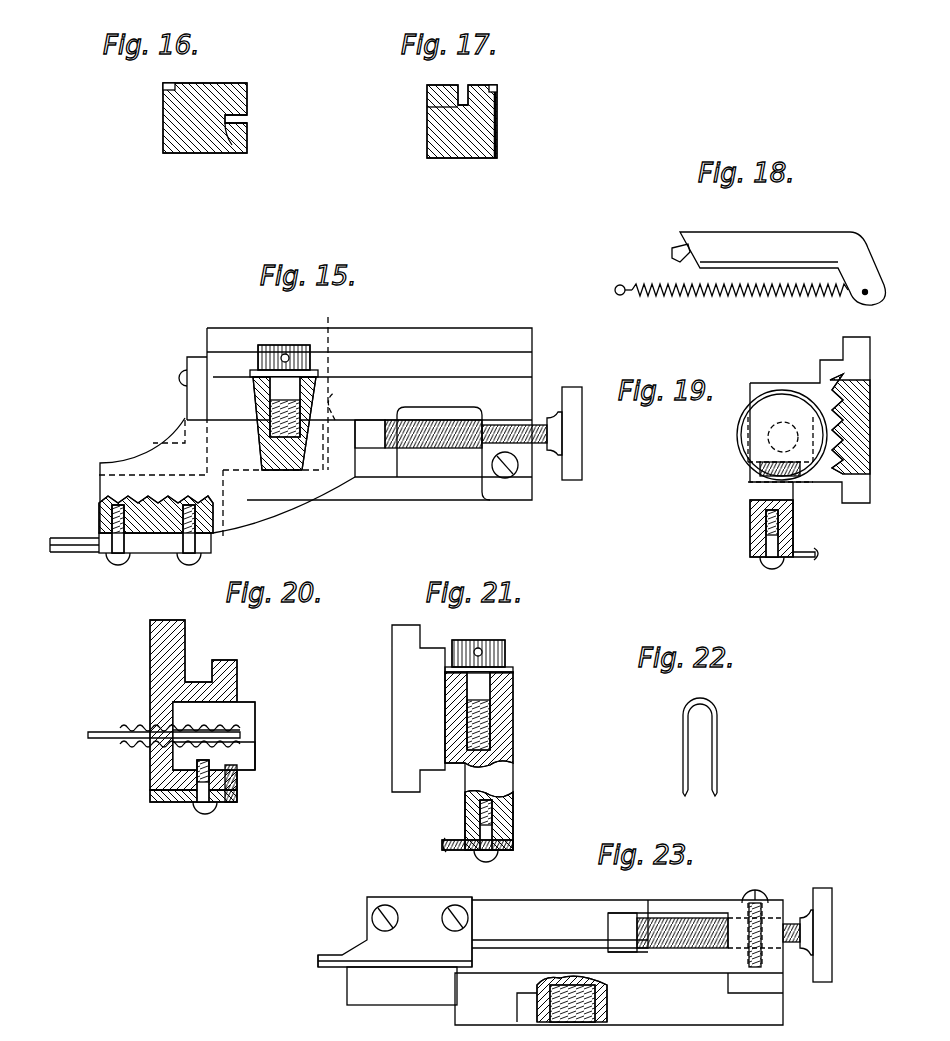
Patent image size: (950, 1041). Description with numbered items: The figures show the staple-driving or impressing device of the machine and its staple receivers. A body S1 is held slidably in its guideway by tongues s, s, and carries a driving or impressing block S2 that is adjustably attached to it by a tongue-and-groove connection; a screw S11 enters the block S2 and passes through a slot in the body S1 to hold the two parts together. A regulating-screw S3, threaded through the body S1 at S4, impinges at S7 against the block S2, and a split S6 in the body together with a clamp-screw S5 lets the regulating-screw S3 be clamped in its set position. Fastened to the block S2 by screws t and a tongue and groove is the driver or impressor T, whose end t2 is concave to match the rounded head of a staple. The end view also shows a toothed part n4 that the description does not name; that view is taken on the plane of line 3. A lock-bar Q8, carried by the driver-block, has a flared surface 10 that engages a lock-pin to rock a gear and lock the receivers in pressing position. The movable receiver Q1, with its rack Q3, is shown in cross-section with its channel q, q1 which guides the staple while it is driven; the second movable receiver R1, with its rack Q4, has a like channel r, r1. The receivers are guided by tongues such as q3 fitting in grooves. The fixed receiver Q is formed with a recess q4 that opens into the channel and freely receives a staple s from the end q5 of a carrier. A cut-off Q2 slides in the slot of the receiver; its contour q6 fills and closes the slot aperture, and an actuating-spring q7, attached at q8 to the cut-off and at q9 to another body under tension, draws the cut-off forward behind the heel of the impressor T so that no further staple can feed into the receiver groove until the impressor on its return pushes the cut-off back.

In FIG. 16, the movable receiver Q1 is at (194, 153).
In FIG. 20, the movable receiver Q1 is at (193, 711).
In FIG. 16, the rack Q3 is at (168, 87).
In FIG. 16, the channel groove q1 is at (247, 119).
In FIG. 20, the channel groove q1 is at (248, 738).
In FIG. 16, the channel slot q is at (247, 145).
In FIG. 20, the channel slot q is at (255, 762).
In FIG. 17, the movable receiver R1 is at (440, 121).
In FIG. 17, the channel slot r is at (427, 107).
In FIG. 17, the channel groove r1 is at (463, 98).
In FIG. 17, the rack Q4 is at (497, 90).
In FIG. 18, the cut-off Q2 is at (783, 268).
In FIG. 18, the cut-off contour q6 is at (672, 256).
In FIG. 18, the actuating-spring q7 is at (712, 296).
In FIG. 18, the spring attachment on cut-off q8 is at (863, 294).
In FIG. 18, the spring attachment on body q9 is at (619, 296).
In FIG. 15, the tongues s is at (355, 416).
In FIG. 19, the tongues s is at (866, 349).
In FIG. 21, the tongues s is at (418, 708).
In FIG. 22, the tongues s is at (708, 747).
In FIG. 23, the tongues s is at (619, 962).
In FIG. 15, the body of impressing device S1 is at (418, 389).
In FIG. 19, the body of impressing device S1 is at (852, 373).
In FIG. 21, the body of impressing device S1 is at (412, 689).
In FIG. 23, the body of impressing device S1 is at (783, 980).
In FIG. 15, the screw S11 is at (448, 441).
In FIG. 15, the driving or impressing block S2 is at (272, 481).
In FIG. 19, the driving or impressing block S2 is at (750, 500).
In FIG. 21, the driving or impressing block S2 is at (515, 772).
In FIG. 23, the driving or impressing block S2 is at (560, 932).
In FIG. 15, the regulating-screw S3 is at (582, 428).
In FIG. 19, the regulating-screw S3 is at (782, 435).
In FIG. 23, the regulating-screw S3 is at (815, 935).
In FIG. 15, the threaded portion S4 is at (328, 397).
In FIG. 15, the clamp-screw S5 is at (503, 478).
In FIG. 19, the clamp-screw S5 is at (748, 470).
In FIG. 23, the clamp-screw S5 is at (760, 915).
In FIG. 15, the split S6 is at (466, 434).
In FIG. 23, the split S6 is at (772, 928).
In FIG. 15, the impinging point S7 is at (372, 448).
In FIG. 23, the impinging point S7 is at (622, 932).
In FIG. 15, the ratchet teeth n4 is at (358, 397).
In FIG. 19, the ratchet teeth n4 is at (868, 418).
In FIG. 23, the ratchet teeth n4 is at (610, 1004).
In FIG. 15, the section line 3 is at (274, 424).
In FIG. 21, the section line 3 is at (479, 656).
In FIG. 15, the lock-bar Q8 is at (227, 472).
In FIG. 23, the lock-bar Q8 is at (402, 987).
In FIG. 15, the flared surface 10 is at (185, 443).
In FIG. 15, the fixed receiver Q is at (98, 475).
In FIG. 20, the fixed receiver Q is at (258, 710).
In FIG. 15, the driver or impressor T is at (90, 552).
In FIG. 19, the driver or impressor T is at (812, 560).
In FIG. 21, the driver or impressor T is at (467, 850).
In FIG. 23, the driver or impressor T is at (395, 932).
In FIG. 15, the screws t is at (148, 572).
In FIG. 19, the screws t is at (770, 568).
In FIG. 21, the screws t is at (500, 857).
In FIG. 23, the screws t is at (445, 915).
In FIG. 15, the concave end t2 is at (62, 552).
In FIG. 21, the concave end t2 is at (443, 850).
In FIG. 23, the concave end t2 is at (318, 967).
In FIG. 20, the tongue q3 is at (237, 790).
In FIG. 20, the recess q4 is at (150, 745).
In FIG. 20, the carrier end q5 is at (105, 740).